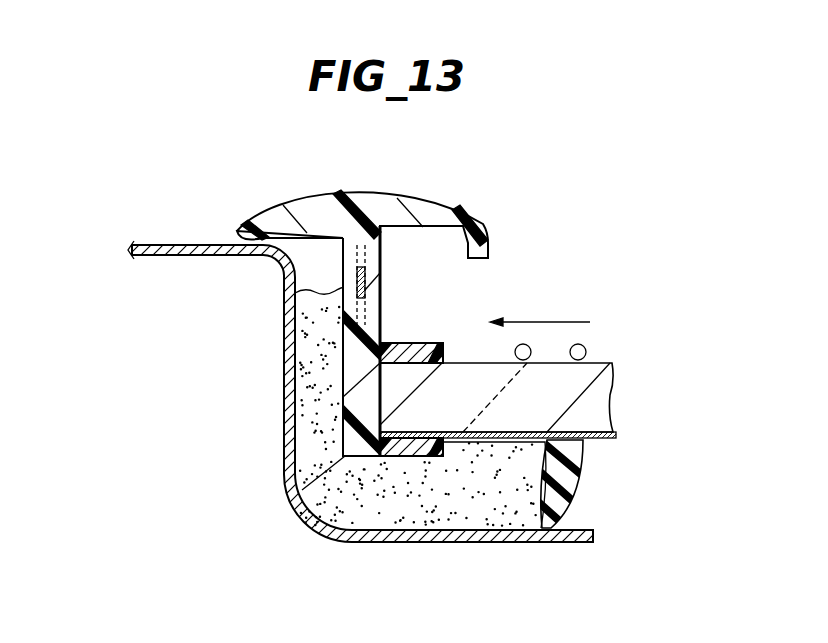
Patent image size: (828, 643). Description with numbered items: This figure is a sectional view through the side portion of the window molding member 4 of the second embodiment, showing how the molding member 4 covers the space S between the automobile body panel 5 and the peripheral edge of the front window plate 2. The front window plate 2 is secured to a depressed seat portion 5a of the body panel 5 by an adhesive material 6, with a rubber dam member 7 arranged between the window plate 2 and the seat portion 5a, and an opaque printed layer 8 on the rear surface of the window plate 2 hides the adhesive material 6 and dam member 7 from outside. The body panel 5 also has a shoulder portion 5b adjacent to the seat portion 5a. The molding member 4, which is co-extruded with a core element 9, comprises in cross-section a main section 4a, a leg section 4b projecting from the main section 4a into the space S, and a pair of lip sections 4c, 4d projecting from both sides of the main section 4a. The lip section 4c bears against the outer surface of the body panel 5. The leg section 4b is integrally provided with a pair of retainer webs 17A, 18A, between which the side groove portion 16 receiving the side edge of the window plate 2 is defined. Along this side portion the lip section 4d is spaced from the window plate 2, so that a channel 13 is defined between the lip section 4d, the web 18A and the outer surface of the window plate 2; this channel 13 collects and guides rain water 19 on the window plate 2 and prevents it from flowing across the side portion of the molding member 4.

The front window plate 2 is at (604, 404).
The window molding member 4 is at (312, 190).
The main section 4a is at (365, 195).
The leg section 4b is at (302, 490).
The lip section 4c is at (420, 194).
The lip section 4d is at (467, 212).
The automobile body panel 5 is at (181, 244).
The seat portion 5a is at (517, 535).
The shoulder portion 5b is at (283, 378).
The adhesive material 6 is at (470, 495).
The rubber dam member 7 is at (577, 480).
The opaque printed layer 8 is at (597, 441).
The core element 9 is at (357, 280).
The channel 13 is at (420, 262).
The side groove portion 16 is at (343, 397).
The retainer web 17A is at (413, 458).
The retainer web 18A is at (430, 340).
The rain water 19 is at (585, 352).
The space S is at (308, 253).